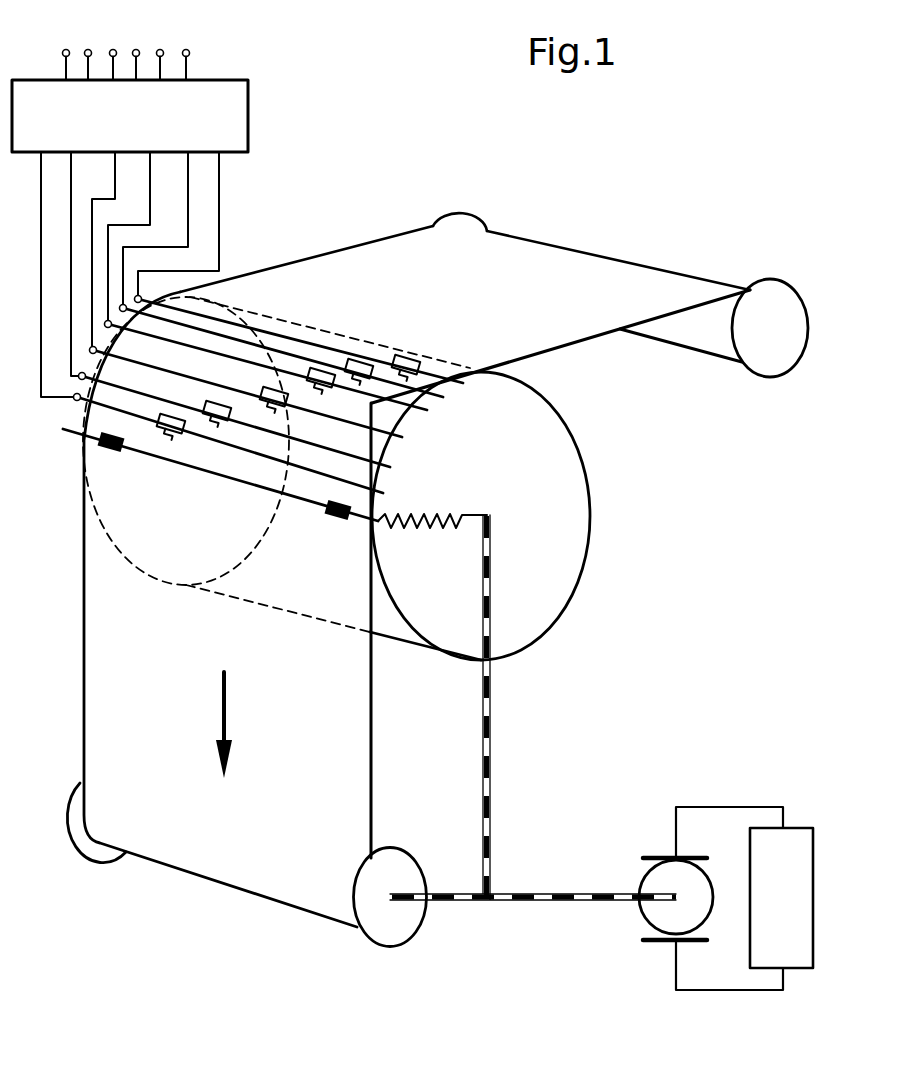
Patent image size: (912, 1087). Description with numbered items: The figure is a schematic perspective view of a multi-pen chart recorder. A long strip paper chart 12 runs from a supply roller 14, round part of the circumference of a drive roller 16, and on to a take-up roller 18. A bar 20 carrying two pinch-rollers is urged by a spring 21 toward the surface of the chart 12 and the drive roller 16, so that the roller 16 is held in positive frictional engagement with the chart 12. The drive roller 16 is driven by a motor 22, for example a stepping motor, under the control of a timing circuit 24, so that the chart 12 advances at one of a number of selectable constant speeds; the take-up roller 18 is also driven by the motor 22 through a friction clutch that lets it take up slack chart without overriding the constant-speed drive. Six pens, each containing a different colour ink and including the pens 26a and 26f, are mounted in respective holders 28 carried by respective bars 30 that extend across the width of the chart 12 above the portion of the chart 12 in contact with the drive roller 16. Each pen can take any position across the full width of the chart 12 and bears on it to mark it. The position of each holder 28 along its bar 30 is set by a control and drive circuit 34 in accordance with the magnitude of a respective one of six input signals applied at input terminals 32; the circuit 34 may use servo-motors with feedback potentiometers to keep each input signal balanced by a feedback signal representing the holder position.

The paper chart 12 is at (560, 338).
The supply roller 14 is at (773, 362).
The drive roller 16 is at (552, 507).
The take-up roller 18 is at (385, 932).
The bar 20 is at (307, 500).
The spring 21 is at (438, 494).
The motor 22 is at (653, 882).
The timing circuit 24 is at (792, 840).
The pen 26a is at (433, 375).
The pen 26f is at (175, 446).
The holder 28 is at (147, 452).
The bar 30 is at (290, 337).
The input terminals 32 is at (186, 48).
The control and drive circuit 34 is at (232, 111).